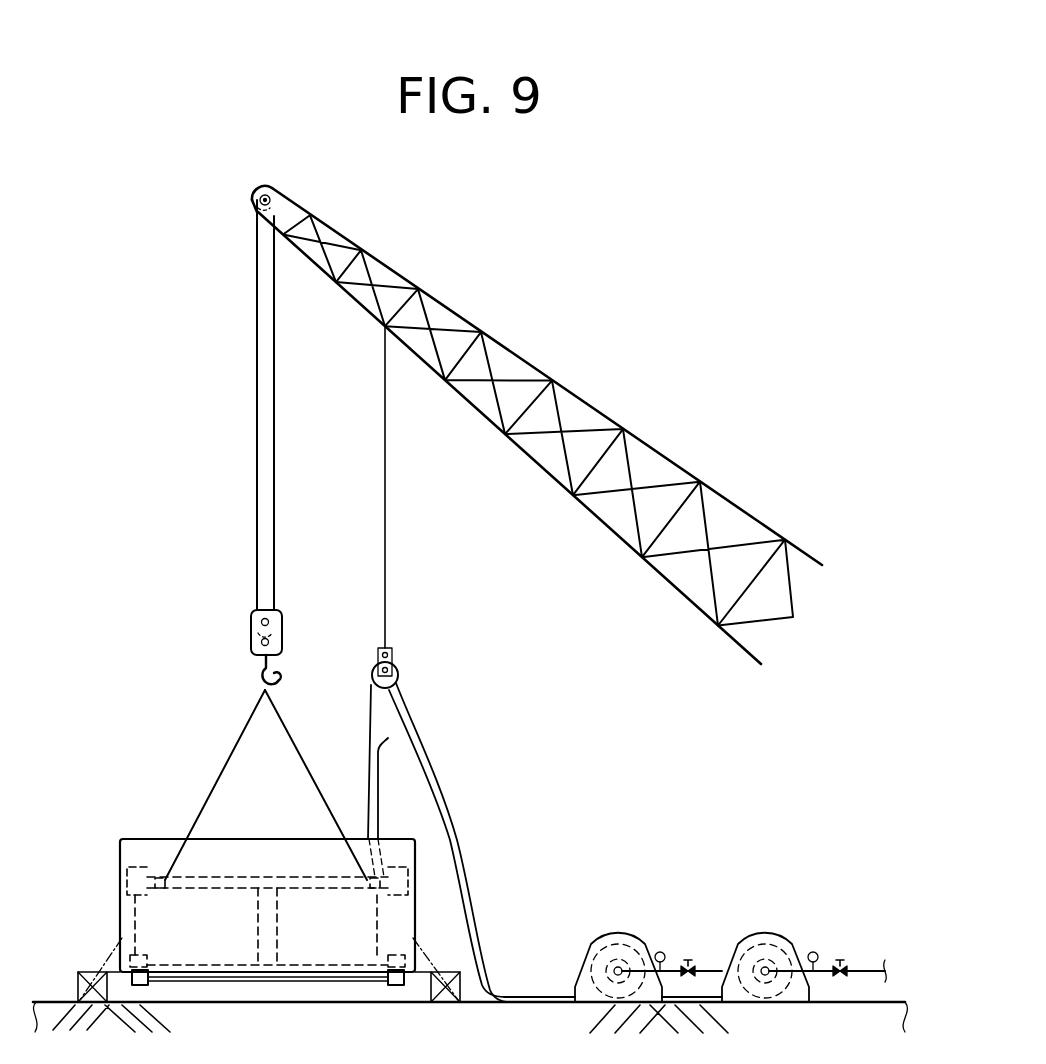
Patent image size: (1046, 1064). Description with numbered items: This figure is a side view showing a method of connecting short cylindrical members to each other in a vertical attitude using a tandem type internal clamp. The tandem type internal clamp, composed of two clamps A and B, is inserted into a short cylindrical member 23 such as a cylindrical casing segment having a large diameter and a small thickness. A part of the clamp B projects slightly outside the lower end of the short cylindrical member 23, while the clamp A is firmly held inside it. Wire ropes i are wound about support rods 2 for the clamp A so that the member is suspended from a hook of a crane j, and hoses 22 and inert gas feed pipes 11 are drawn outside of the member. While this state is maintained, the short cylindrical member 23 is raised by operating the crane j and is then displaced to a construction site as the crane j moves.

The crane j is at (505, 347).
The wire rope i is at (243, 722).
The hose 22 is at (423, 737).
The inert gas feed pipe 11 is at (432, 758).
The short cylindrical member 23 is at (150, 838).
The support rod 2 is at (215, 878).
The clamp A is at (128, 883).
The clamp B is at (215, 982).